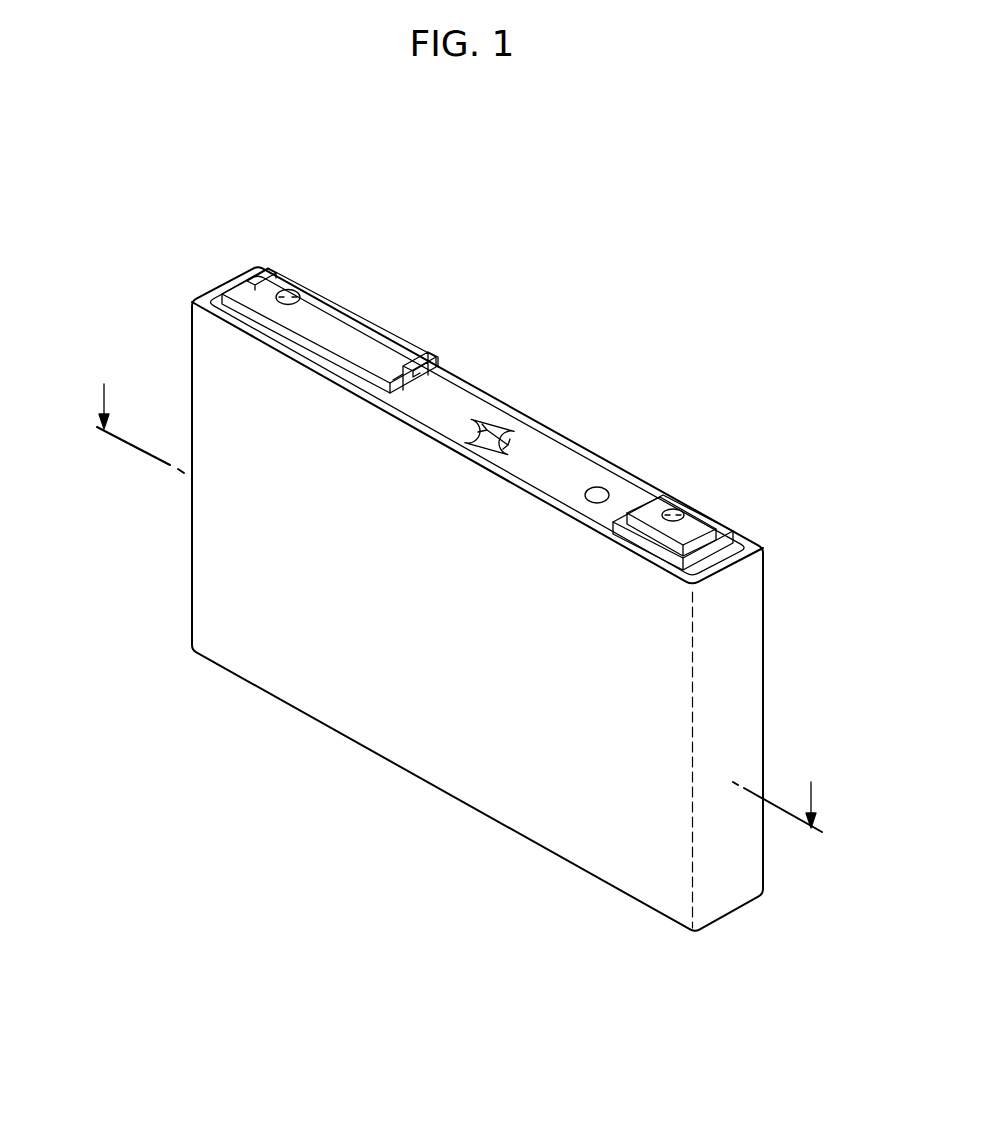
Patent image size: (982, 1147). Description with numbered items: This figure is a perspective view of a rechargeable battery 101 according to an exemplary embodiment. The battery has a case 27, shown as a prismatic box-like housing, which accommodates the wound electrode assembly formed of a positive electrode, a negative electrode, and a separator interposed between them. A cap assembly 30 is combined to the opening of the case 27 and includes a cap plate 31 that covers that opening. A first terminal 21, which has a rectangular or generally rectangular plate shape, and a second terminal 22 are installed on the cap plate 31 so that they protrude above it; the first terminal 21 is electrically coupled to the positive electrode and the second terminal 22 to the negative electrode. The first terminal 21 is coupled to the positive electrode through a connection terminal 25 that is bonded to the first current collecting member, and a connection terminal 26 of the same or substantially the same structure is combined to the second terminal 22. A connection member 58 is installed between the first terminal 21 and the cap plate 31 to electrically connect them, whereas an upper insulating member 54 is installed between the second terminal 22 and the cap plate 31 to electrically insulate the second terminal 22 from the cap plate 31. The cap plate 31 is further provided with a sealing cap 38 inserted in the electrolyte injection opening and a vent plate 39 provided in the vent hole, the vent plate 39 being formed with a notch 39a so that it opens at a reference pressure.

The rechargeable battery 101 is at (602, 281).
The first terminal 21 is at (703, 519).
The second terminal 22 is at (333, 313).
The connection terminal 25 is at (673, 508).
The connection terminal 26 is at (290, 290).
The case 27 is at (432, 748).
The cap assembly 30 is at (573, 443).
The cap plate 31 is at (452, 393).
The sealing cap 38 is at (599, 487).
The vent plate 39 is at (489, 417).
The notch 39a is at (503, 444).
The upper insulating member 54 is at (397, 333).
The connection member 58 is at (722, 524).